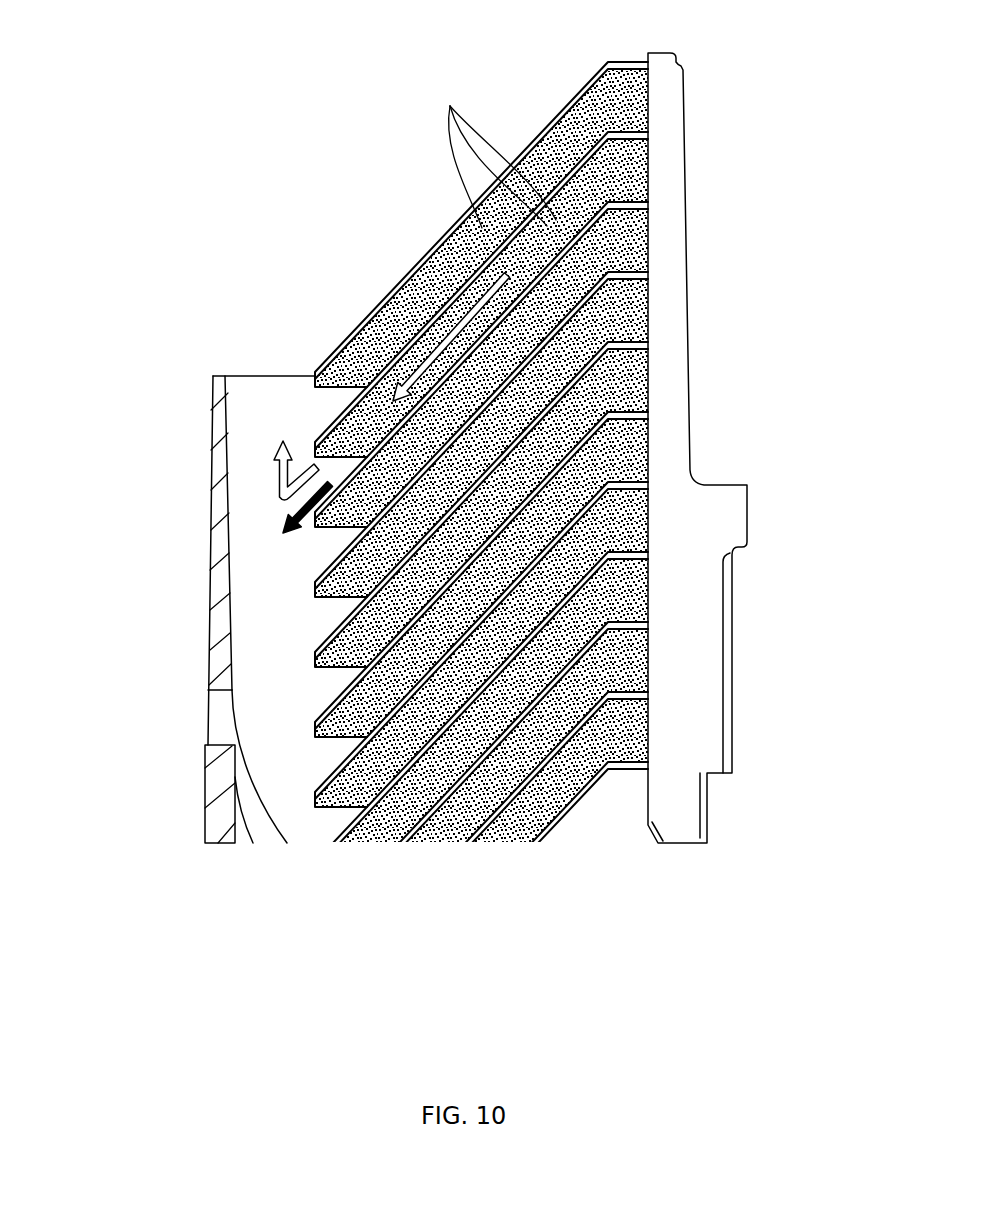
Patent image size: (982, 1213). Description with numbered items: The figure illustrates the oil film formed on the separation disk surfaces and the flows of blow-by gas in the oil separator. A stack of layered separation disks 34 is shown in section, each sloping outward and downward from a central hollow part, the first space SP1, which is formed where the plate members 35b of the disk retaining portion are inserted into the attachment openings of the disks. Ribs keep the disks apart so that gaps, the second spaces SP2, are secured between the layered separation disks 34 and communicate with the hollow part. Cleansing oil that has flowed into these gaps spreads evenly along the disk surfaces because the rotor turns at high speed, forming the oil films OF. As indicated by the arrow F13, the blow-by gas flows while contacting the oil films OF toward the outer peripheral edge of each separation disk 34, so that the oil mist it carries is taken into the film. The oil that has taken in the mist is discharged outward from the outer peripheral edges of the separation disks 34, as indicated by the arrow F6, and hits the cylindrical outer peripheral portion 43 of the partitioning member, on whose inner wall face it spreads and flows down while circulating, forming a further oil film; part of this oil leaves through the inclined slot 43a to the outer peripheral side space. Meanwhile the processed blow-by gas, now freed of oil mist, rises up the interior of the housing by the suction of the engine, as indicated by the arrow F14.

The separation disk 34 is at (324, 363).
The oil film OF is at (494, 154).
The blow-by gas flow along oil film F13 is at (437, 308).
The processed blow-by gas rising flow F14 is at (278, 477).
The cleansing oil discharge flow F6 is at (287, 528).
The first space SP1 is at (756, 223).
The second space SP2 is at (367, 702).
The outer peripheral portion 43 is at (250, 374).
The slot 43a is at (222, 717).
The plate member 35b is at (676, 497).